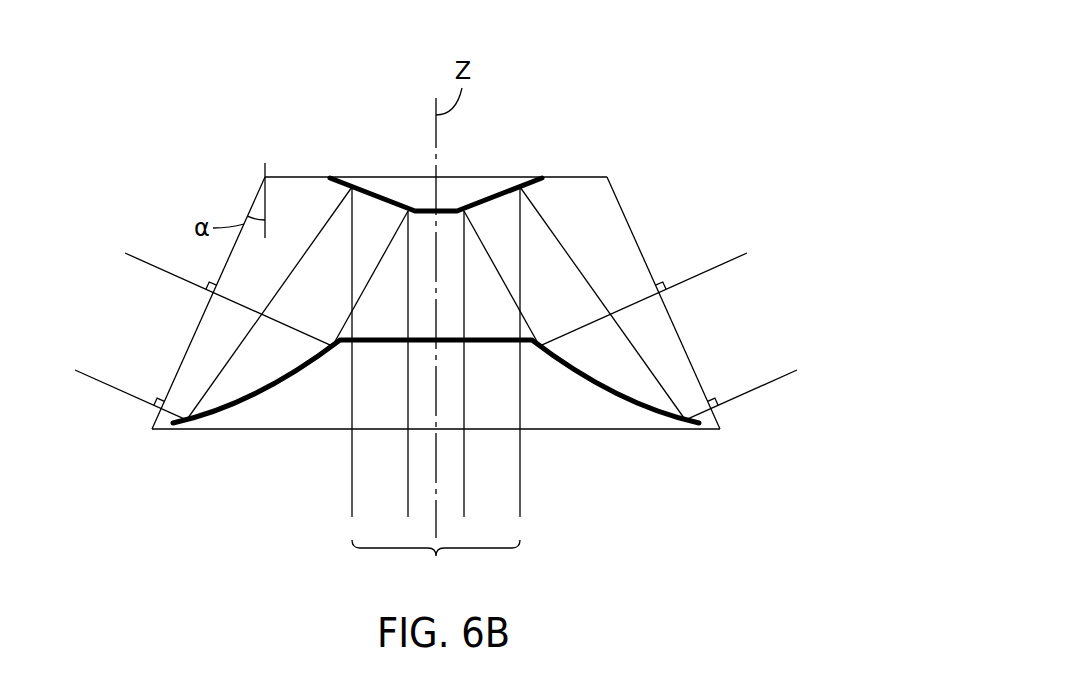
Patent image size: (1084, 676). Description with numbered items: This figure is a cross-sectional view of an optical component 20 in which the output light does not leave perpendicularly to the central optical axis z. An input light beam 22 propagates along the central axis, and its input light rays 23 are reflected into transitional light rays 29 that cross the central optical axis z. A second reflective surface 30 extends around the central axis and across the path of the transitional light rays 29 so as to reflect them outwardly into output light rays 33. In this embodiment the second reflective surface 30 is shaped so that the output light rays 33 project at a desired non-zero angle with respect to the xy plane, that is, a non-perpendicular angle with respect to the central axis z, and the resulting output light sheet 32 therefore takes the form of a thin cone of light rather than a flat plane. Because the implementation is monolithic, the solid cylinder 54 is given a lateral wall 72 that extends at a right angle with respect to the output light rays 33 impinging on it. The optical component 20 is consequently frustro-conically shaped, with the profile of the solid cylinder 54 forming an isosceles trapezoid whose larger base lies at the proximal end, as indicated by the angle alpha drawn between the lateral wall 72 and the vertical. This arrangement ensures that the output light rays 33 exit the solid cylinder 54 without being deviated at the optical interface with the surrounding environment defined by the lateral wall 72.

The optical component 20 is at (741, 106).
The input light beam 22 is at (436, 566).
The input light rays 23 is at (520, 483).
The transitional light rays 29 is at (575, 262).
The second reflective surface 30 is at (250, 388).
The output light sheet 32 is at (487, 302).
The output light rays 33 is at (758, 388).
The solid cylinder 54 is at (582, 177).
The lateral wall 72 is at (189, 345).